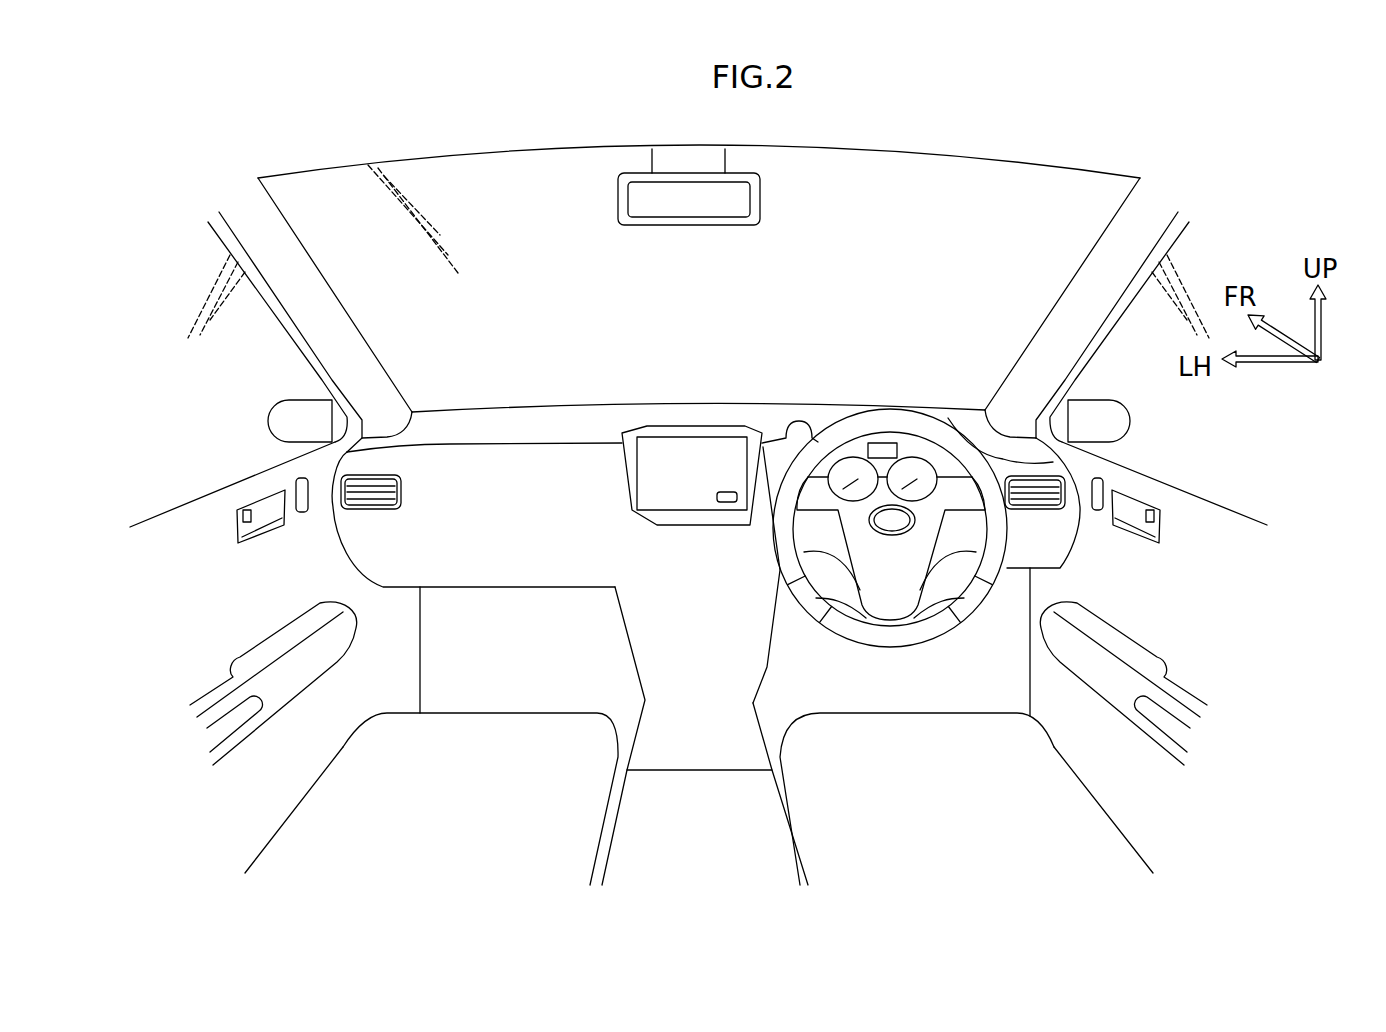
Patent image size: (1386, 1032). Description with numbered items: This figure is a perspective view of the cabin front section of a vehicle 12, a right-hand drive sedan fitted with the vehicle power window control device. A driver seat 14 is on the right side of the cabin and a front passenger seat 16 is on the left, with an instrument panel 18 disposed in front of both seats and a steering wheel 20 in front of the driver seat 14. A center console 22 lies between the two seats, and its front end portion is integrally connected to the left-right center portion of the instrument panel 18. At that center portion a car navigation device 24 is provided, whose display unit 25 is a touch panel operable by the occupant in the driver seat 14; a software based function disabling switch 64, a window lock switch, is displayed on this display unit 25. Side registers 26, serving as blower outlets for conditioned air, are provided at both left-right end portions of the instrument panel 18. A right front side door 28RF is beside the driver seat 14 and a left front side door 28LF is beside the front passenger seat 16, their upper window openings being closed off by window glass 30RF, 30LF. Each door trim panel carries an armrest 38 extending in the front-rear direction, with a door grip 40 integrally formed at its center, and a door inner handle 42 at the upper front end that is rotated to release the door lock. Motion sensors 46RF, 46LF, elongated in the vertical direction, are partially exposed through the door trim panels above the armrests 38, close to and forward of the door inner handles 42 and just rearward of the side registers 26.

The vehicle 12 is at (1240, 208).
The driver seat 14 is at (972, 740).
The front passenger seat 16 is at (488, 747).
The instrument panel 18 is at (571, 404).
The steering wheel 20 is at (853, 640).
The center console 22 is at (660, 733).
The car navigation device 24 is at (673, 428).
The display unit 25 is at (721, 440).
The side register 26 is at (375, 512).
The left front side door 28LF is at (273, 798).
The right front side door 28RF is at (1150, 802).
The window glass 30LF is at (198, 495).
The window glass 30RF is at (1233, 480).
The armrest 38 is at (288, 690).
The door grip 40 is at (212, 693).
The door inner handle 42 is at (278, 532).
The motion sensor 46LF is at (297, 478).
The motion sensor 46RF is at (1100, 478).
The function disabling switch 64 is at (730, 505).